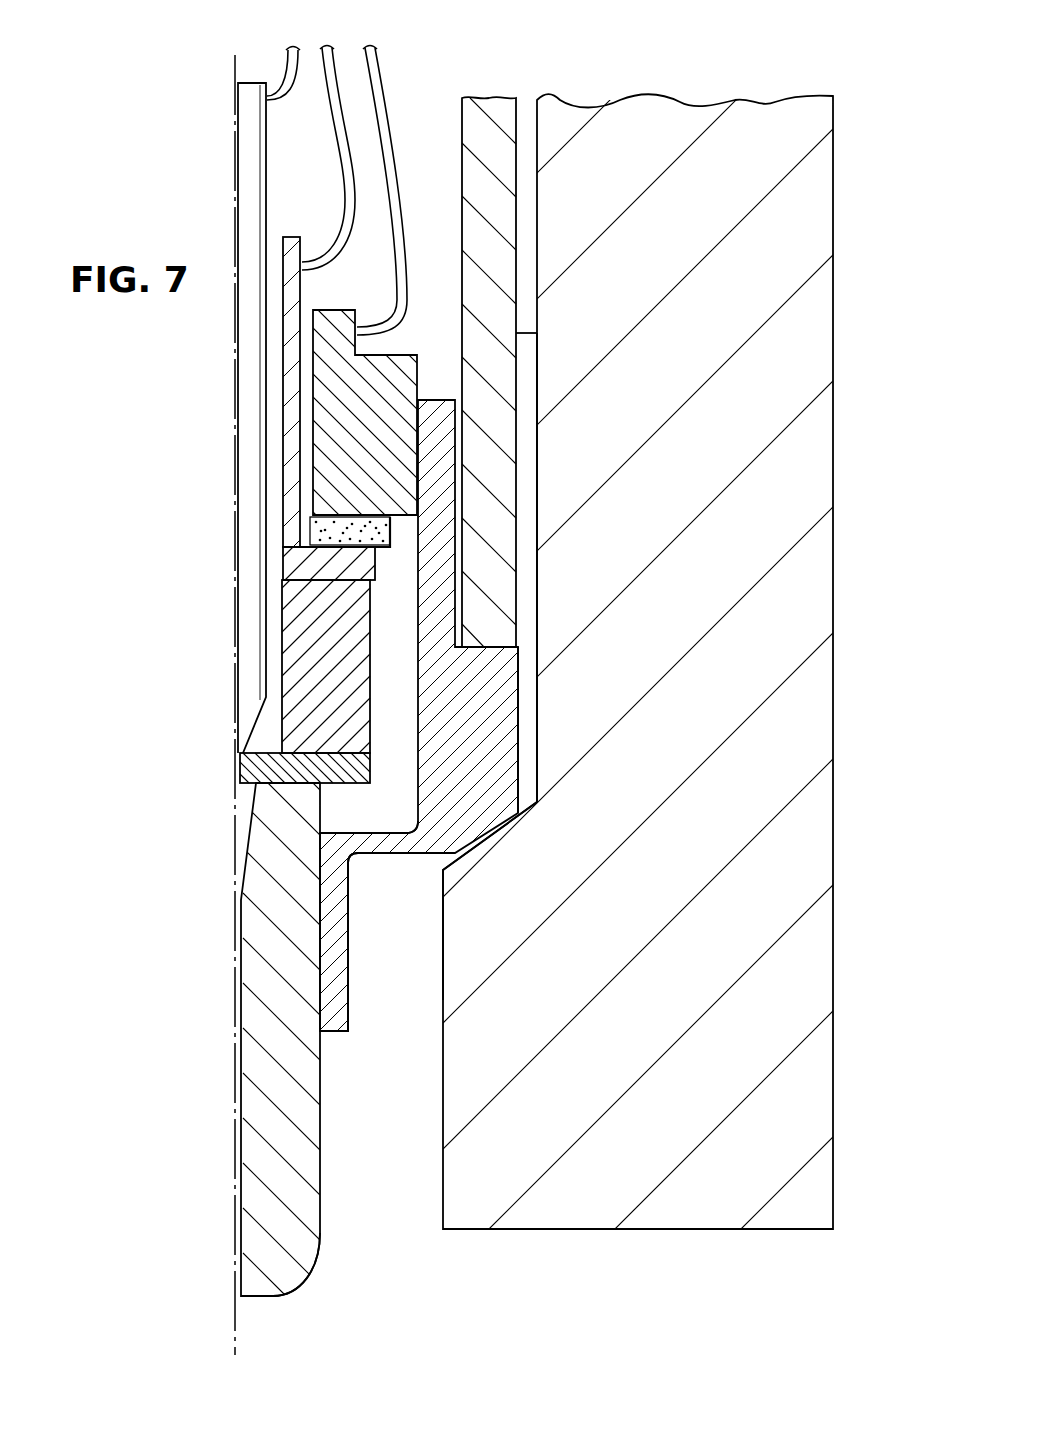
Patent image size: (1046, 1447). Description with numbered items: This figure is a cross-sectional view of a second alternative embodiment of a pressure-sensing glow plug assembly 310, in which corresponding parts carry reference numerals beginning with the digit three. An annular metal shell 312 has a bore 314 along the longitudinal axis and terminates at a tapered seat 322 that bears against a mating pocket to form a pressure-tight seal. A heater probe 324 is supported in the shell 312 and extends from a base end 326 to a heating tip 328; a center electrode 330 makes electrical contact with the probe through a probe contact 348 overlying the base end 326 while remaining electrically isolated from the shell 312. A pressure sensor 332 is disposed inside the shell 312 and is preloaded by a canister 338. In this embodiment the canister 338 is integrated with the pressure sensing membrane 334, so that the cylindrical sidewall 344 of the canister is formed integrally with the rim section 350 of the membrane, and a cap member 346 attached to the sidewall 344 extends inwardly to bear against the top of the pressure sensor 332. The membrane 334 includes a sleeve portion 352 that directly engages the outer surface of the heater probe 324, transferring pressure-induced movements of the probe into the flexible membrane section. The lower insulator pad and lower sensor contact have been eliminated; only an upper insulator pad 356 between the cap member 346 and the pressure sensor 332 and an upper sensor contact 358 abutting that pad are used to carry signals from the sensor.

The glow plug assembly 310 is at (481, 50).
The shell 312 is at (495, 95).
The bore 314 is at (462, 121).
The seat 322 is at (490, 838).
The heater probe 324 is at (335, 1147).
The base end 326 is at (262, 777).
The heating tip 328 is at (250, 1297).
The electrode 330 is at (246, 150).
The pressure sensor 332 is at (278, 718).
The pressure sensing membrane 334 is at (398, 855).
The canister 338 is at (460, 498).
The sidewall 344 is at (517, 333).
The cap member 346 is at (388, 355).
The probe contact 348 is at (372, 763).
The rim section 350 is at (520, 735).
The sleeve portion 352 is at (350, 1008).
The upper insulator pad 356 is at (310, 532).
The upper sensor contact 358 is at (315, 565).